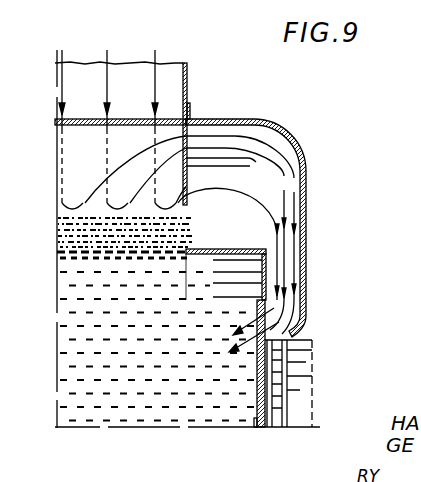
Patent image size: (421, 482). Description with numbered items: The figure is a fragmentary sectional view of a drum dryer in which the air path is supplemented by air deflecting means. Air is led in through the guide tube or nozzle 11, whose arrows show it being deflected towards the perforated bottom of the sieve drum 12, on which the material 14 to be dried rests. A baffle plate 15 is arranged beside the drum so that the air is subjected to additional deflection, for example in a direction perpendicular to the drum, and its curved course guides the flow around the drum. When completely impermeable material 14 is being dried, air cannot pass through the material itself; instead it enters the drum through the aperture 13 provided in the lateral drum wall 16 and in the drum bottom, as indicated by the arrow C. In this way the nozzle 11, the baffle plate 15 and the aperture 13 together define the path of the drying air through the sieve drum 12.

The guide tube or nozzle 11 is at (138, 78).
The sieve drum 12 is at (133, 255).
The aperture 13 is at (260, 309).
The material to be dried 14 is at (193, 232).
The baffle plate 15 is at (275, 130).
The lateral drum wall 16 is at (257, 297).
The arrow indicating air flow C is at (244, 339).